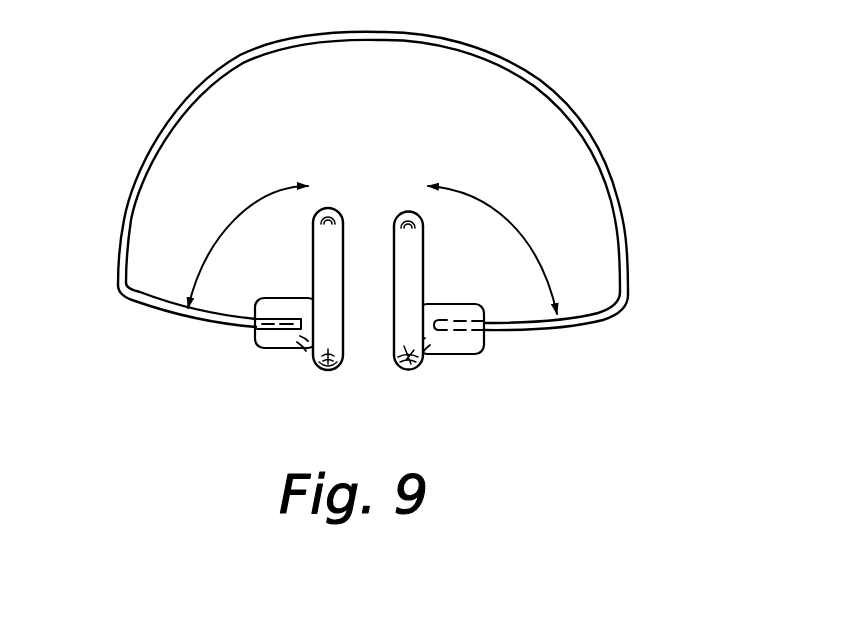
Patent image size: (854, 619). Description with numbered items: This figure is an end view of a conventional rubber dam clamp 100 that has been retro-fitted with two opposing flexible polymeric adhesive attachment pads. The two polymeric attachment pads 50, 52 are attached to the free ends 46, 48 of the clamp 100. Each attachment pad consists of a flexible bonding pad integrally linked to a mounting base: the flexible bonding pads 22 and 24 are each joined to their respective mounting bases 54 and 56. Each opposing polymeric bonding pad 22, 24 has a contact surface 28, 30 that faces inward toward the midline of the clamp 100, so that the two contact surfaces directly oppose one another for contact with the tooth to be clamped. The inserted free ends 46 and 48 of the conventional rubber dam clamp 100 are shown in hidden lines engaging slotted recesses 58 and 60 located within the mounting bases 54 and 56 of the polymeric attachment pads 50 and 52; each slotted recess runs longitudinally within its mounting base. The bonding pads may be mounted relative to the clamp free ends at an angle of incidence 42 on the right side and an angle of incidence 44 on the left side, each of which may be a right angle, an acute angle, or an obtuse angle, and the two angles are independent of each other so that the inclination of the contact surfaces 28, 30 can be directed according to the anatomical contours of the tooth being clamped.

The conventional rubber dam clamp 100 is at (397, 209).
The free end 48 is at (203, 324).
The free end 46 is at (553, 325).
The mounting base 56 is at (257, 323).
The mounting base 54 is at (497, 326).
The slotted recess 60 is at (282, 333).
The slotted recess 58 is at (438, 325).
The polymeric attachment pad 52 is at (310, 268).
The polymeric attachment pad 50 is at (440, 266).
The flexible polymeric bonding pad 24 is at (325, 370).
The flexible polymeric bonding pad 22 is at (410, 361).
The contact surface 30 is at (344, 312).
The contact surface 28 is at (393, 333).
The angle of incidence 44 is at (253, 199).
The angle of incidence 42 is at (522, 232).